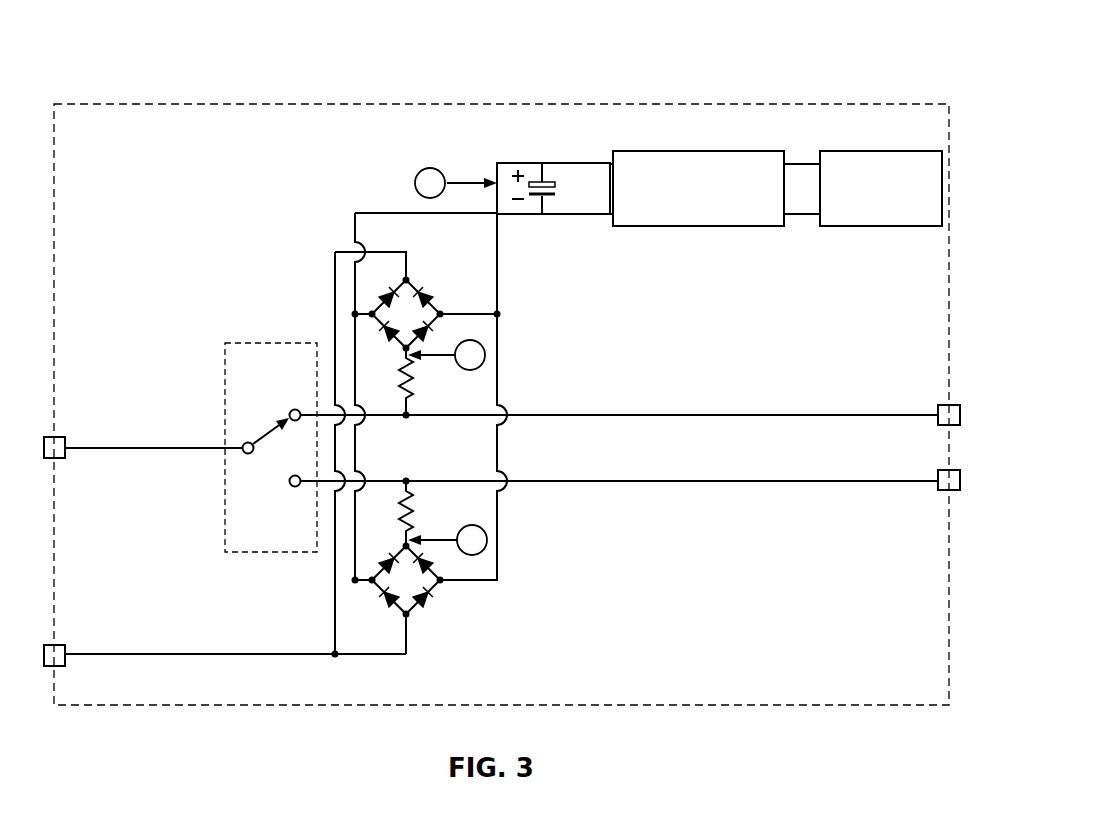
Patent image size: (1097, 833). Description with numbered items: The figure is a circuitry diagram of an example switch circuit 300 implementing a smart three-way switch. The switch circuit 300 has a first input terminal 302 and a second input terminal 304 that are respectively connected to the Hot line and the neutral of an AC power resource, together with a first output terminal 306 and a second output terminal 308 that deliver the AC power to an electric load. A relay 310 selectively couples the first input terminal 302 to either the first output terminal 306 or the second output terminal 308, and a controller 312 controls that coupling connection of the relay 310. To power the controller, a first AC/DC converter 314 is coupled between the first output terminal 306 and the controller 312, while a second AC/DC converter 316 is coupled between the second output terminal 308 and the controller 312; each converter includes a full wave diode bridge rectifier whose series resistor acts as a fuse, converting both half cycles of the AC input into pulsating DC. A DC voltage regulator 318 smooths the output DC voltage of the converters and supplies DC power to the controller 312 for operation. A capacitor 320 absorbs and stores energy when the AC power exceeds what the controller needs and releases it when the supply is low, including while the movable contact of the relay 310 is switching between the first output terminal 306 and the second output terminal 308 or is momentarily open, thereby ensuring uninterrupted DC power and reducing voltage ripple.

The switch circuit 300 is at (872, 44).
The first input terminal 302 is at (168, 452).
The second input terminal 304 is at (168, 657).
The first output terminal 306 is at (945, 405).
The second output terminal 308 is at (945, 490).
The relay 310 is at (256, 280).
The controller 312 is at (889, 150).
The first AC/DC converter 314 is at (341, 240).
The second AC/DC converter 316 is at (520, 560).
The DC voltage regulator 318 is at (672, 134).
The capacitor 320 is at (522, 104).